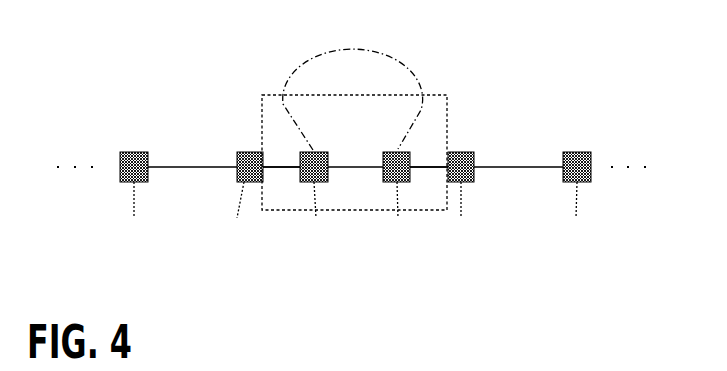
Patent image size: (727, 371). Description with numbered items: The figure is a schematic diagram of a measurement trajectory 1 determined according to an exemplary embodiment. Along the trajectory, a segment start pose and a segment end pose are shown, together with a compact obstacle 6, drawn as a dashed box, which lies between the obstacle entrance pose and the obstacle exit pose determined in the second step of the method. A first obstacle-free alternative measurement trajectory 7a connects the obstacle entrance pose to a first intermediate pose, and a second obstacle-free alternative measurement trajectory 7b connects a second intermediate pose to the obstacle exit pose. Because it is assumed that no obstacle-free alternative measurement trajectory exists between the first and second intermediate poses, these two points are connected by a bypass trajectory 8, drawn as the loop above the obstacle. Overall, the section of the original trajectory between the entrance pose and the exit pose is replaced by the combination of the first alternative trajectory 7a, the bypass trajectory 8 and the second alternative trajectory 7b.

The measurement trajectory 1 is at (183, 261).
The compact obstacle 6 is at (447, 96).
The first obstacle-free alternative measurement trajectory 7a is at (280, 168).
The second obstacle-free alternative measurement trajectory 7b is at (415, 165).
The bypass trajectory 8 is at (401, 55).